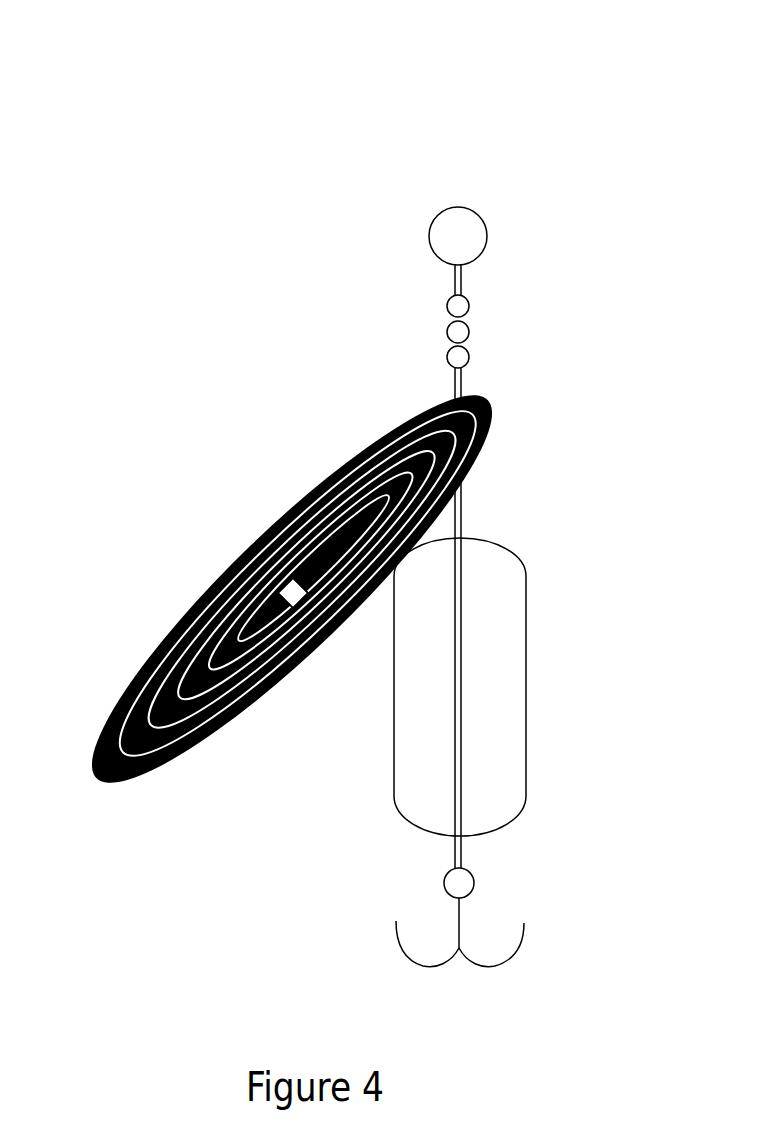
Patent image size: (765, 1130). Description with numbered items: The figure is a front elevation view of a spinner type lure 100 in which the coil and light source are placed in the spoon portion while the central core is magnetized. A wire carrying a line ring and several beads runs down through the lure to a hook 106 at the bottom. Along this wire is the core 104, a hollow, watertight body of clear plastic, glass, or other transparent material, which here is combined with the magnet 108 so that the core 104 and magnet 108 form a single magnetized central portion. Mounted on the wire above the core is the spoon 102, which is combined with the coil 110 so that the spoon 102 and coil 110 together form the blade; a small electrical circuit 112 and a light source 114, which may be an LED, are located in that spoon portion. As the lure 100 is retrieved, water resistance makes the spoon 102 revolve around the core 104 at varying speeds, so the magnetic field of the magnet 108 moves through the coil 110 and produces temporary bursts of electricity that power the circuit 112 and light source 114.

The spinner type lure 100 is at (437, 210).
The spoon 102 is at (292, 589).
The coil 110 is at (355, 457).
The electrical circuit 112 is at (277, 578).
The light source 114 is at (277, 590).
The core 104 is at (524, 660).
The magnet 108 is at (582, 523).
The hook 106 is at (522, 920).